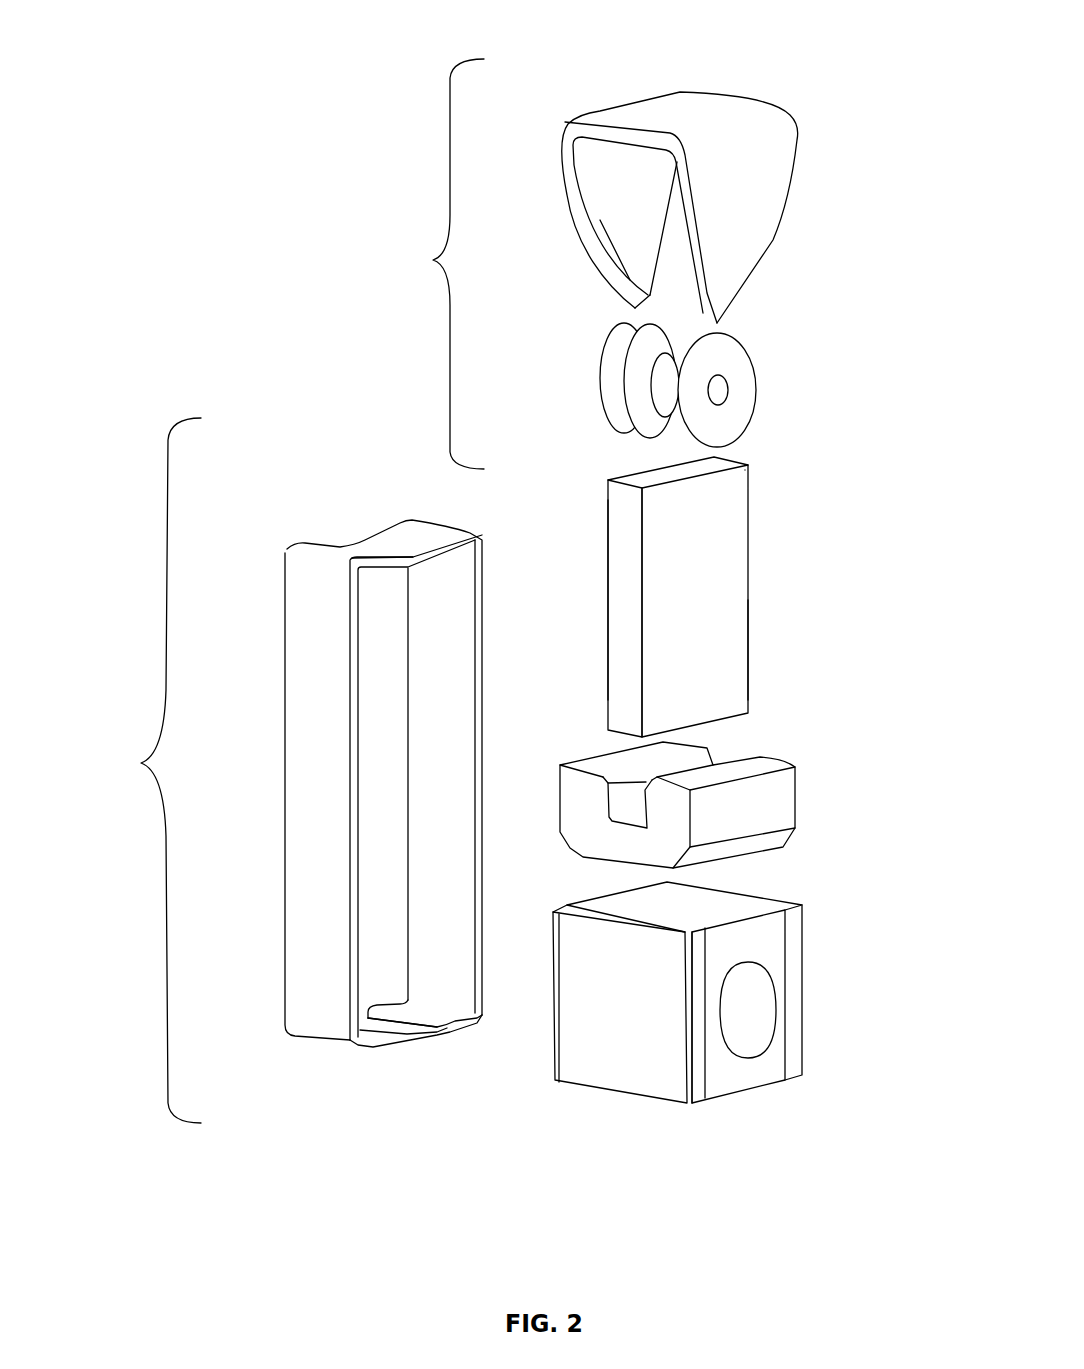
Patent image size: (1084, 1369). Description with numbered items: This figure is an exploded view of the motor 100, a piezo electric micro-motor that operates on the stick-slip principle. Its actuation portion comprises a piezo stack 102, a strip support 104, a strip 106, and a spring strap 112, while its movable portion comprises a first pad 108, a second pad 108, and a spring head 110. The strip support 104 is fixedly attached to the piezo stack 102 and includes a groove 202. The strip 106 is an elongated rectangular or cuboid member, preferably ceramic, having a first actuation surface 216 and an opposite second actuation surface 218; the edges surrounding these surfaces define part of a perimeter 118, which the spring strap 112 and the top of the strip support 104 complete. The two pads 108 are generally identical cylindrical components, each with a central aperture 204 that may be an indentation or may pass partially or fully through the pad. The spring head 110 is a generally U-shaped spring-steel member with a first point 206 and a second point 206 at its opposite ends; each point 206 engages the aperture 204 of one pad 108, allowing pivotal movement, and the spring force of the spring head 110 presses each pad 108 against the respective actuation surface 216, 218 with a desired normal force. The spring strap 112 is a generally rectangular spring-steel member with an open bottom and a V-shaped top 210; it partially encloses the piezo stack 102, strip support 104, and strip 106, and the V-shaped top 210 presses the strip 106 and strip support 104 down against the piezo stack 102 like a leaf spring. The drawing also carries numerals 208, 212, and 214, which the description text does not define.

The motor 100 is at (862, 72).
The piezo stack 102 is at (637, 1023).
The strip support 104 is at (737, 821).
The strip 106 is at (705, 633).
The pad 108 is at (708, 395).
The spring head 110 is at (680, 112).
The spring strap 112 is at (315, 575).
The perimeter 118 is at (750, 668).
The groove 202 is at (630, 808).
The aperture 204 is at (730, 390).
The point 206 is at (650, 290).
The channel opening 208 is at (420, 1043).
The V-shaped top 210 is at (390, 548).
The cover assembly 212 is at (141, 763).
The strap assembly 214 is at (433, 260).
The first actuation surface 216 is at (717, 530).
The second actuation surface 218 is at (607, 568).